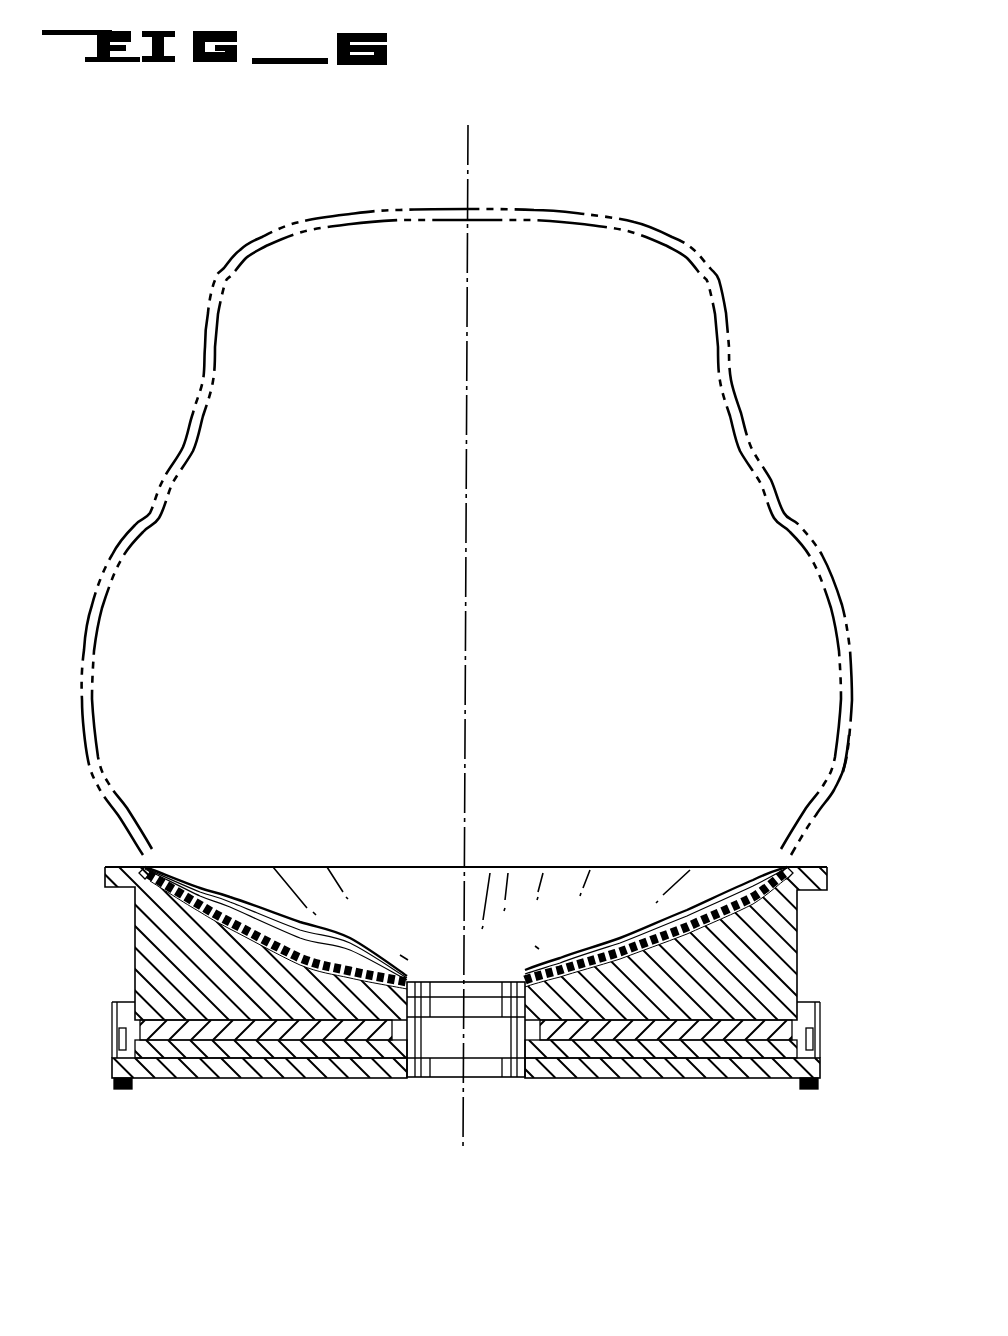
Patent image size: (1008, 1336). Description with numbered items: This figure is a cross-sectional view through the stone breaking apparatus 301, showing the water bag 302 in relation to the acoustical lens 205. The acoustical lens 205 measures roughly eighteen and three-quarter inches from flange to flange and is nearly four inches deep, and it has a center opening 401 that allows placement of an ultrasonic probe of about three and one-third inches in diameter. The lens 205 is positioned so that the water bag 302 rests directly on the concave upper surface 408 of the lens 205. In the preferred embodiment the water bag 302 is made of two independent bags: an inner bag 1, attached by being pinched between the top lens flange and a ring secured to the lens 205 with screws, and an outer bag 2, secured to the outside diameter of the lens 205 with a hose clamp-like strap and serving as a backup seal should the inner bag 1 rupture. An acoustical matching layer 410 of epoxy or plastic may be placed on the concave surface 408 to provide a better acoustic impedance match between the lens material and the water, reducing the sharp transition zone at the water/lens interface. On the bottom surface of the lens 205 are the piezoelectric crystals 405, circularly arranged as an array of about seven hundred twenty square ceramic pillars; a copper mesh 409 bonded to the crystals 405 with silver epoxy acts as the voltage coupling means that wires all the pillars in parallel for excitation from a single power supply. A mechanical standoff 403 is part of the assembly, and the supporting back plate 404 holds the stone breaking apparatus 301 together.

The stone breaking apparatus 301 is at (490, 495).
The water bag 302 is at (579, 219).
The inner bag 1 is at (839, 741).
The outer bag 2 is at (852, 748).
The acoustical lens 205 is at (805, 948).
The center opening 401 is at (453, 981).
The concave upper surface 408 is at (212, 912).
The acoustical matching layer 410 is at (631, 947).
The mechanical standoff 403 is at (821, 1072).
The supporting back plate 404 is at (653, 1072).
The piezoelectric crystals 405 is at (285, 1040).
The copper mesh 409 is at (192, 1052).